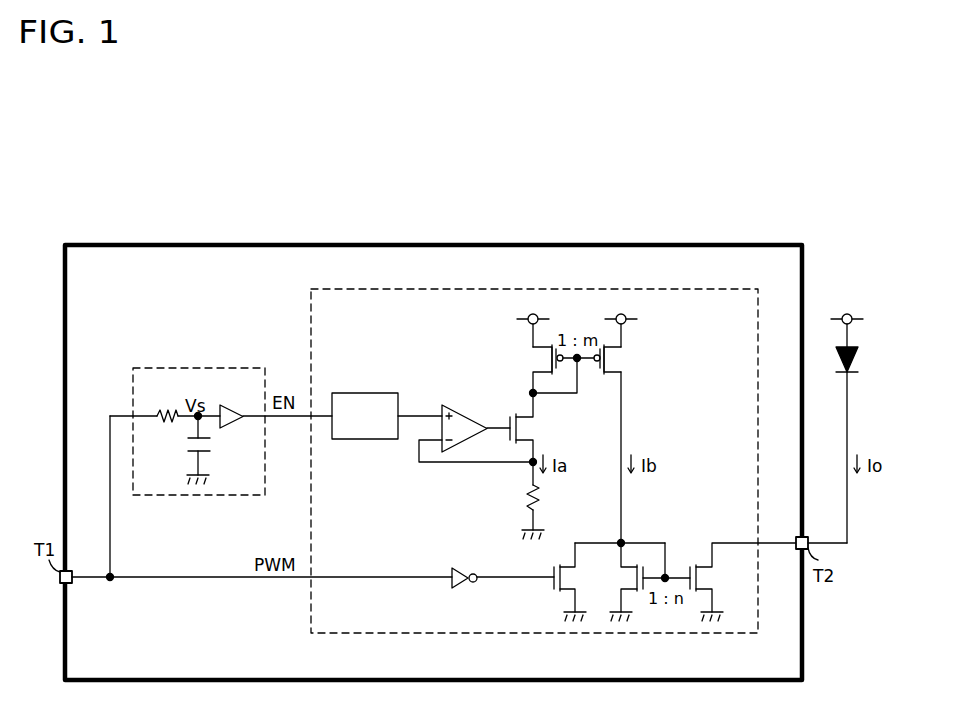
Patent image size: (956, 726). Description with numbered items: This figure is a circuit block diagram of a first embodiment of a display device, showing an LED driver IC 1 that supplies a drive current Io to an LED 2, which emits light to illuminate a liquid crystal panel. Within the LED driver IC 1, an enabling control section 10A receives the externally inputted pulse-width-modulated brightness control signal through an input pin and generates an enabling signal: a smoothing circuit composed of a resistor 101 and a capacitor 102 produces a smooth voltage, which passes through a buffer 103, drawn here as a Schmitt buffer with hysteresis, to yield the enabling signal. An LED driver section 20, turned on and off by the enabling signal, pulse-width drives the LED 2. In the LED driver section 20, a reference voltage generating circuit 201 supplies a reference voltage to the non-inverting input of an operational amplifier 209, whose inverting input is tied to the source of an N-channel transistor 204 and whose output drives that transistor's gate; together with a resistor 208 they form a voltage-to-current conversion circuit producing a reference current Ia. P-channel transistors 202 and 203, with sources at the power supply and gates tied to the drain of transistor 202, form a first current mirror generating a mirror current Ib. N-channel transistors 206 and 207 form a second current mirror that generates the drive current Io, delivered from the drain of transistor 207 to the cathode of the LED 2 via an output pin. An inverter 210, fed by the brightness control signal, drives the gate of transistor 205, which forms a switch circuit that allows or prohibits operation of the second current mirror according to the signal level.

The LED driver IC 1 is at (435, 243).
The LED 2 is at (860, 428).
The enabling control section 10A is at (212, 368).
The resistor 101 is at (168, 408).
The capacitor 102 is at (222, 450).
The buffer 103 is at (236, 407).
The LED driver section 20 is at (536, 289).
The reference voltage generating circuit 201 is at (368, 392).
The P-channel MOS field-effect transistor 202 is at (528, 353).
The P-channel MOS field-effect transistor 203 is at (627, 428).
The N-channel MOS field-effect transistor 204 is at (543, 427).
The N-channel MOS field-effect transistor 205 is at (552, 590).
The N-channel MOS field-effect transistor 206 is at (611, 582).
The N-channel MOS field-effect transistor 207 is at (746, 582).
The resistor 208 is at (508, 500).
The operational amplifier 209 is at (472, 411).
The inverter 210 is at (464, 569).